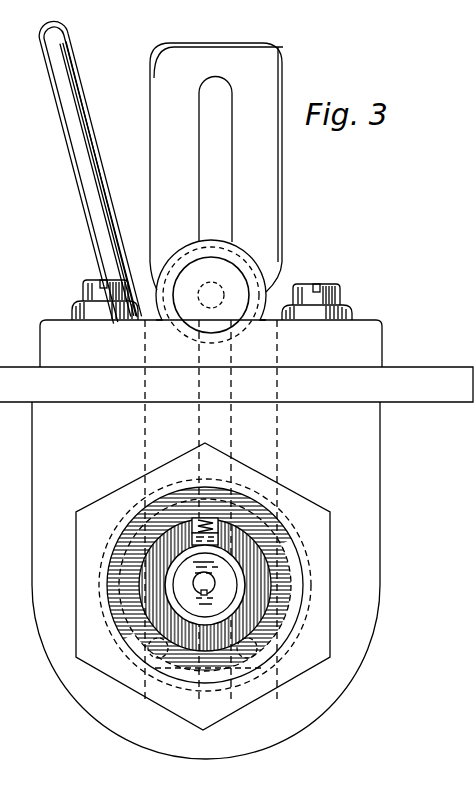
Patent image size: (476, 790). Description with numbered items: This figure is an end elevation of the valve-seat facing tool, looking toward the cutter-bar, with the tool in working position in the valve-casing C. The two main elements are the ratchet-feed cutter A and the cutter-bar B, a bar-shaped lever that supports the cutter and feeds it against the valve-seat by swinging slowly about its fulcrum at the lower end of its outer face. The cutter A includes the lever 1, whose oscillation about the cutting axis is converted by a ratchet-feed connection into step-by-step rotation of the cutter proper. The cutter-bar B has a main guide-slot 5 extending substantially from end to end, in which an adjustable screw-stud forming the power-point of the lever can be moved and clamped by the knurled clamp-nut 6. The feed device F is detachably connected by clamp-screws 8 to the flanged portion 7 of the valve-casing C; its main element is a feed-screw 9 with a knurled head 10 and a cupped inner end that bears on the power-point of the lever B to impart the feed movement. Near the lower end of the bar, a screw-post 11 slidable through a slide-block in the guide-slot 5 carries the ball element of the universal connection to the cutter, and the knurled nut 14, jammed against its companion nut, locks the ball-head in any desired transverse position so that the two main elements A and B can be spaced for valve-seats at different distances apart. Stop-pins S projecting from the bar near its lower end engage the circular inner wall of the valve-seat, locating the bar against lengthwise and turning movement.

The lever 1 is at (121, 248).
The main guide-slot 5 is at (218, 193).
The knurled clamp-nut 6 is at (211, 273).
The flanged portion 7 is at (207, 539).
The clamp-screws 8 is at (90, 287).
The feed-screw 9 is at (207, 312).
The knurled head 10 is at (236, 328).
The screw-post 11 is at (215, 583).
The knurled nut 14 is at (205, 584).
The ratchet-feed cutter A is at (90, 172).
The cutter-bar B is at (228, 167).
The valve-casing C is at (236, 374).
The feed device F is at (261, 303).
The stop-pins S is at (152, 657).